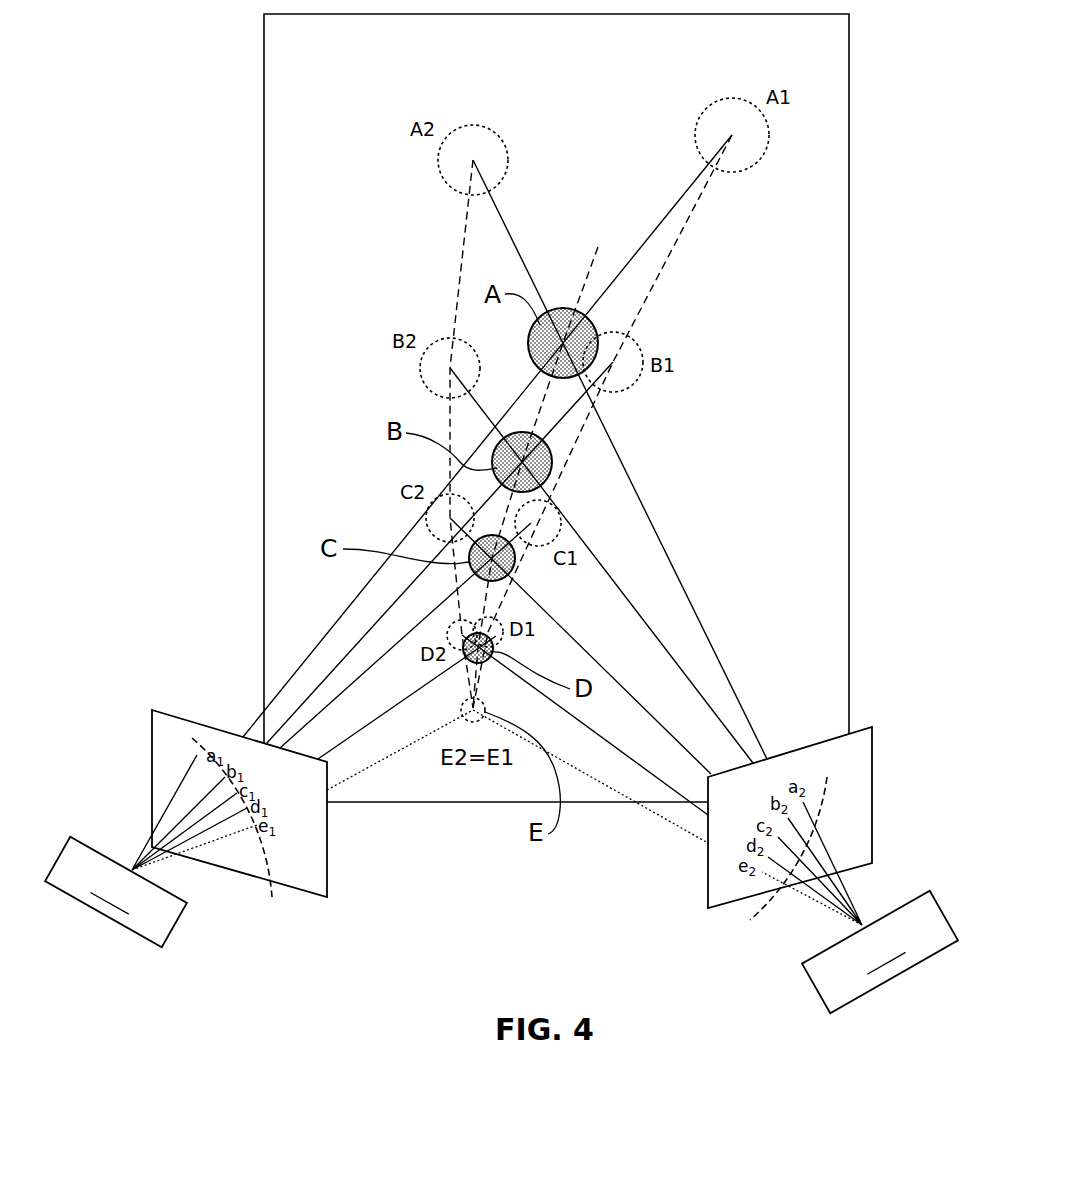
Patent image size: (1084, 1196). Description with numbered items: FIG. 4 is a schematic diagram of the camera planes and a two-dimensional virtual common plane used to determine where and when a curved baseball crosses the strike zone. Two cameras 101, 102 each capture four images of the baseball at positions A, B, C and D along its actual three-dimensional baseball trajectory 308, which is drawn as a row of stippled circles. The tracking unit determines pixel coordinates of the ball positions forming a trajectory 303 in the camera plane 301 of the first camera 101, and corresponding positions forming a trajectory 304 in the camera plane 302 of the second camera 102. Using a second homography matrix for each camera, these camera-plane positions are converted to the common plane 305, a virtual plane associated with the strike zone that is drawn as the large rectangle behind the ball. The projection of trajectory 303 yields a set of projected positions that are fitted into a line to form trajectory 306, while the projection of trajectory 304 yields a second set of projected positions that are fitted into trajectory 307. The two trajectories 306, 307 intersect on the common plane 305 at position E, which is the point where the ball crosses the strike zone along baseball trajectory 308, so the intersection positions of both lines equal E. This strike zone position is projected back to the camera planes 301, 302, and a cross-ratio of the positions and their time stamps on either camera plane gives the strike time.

The camera 101 is at (116, 892).
The camera 102 is at (880, 952).
The 2D camera plane 301 is at (168, 783).
The 2D camera plane 302 is at (852, 800).
The trajectory 303 is at (192, 738).
The trajectory 304 is at (827, 777).
The 2D common plane 305 is at (849, 215).
The trajectory 306 is at (672, 246).
The trajectory 307 is at (461, 252).
The baseball trajectory 308 is at (596, 262).